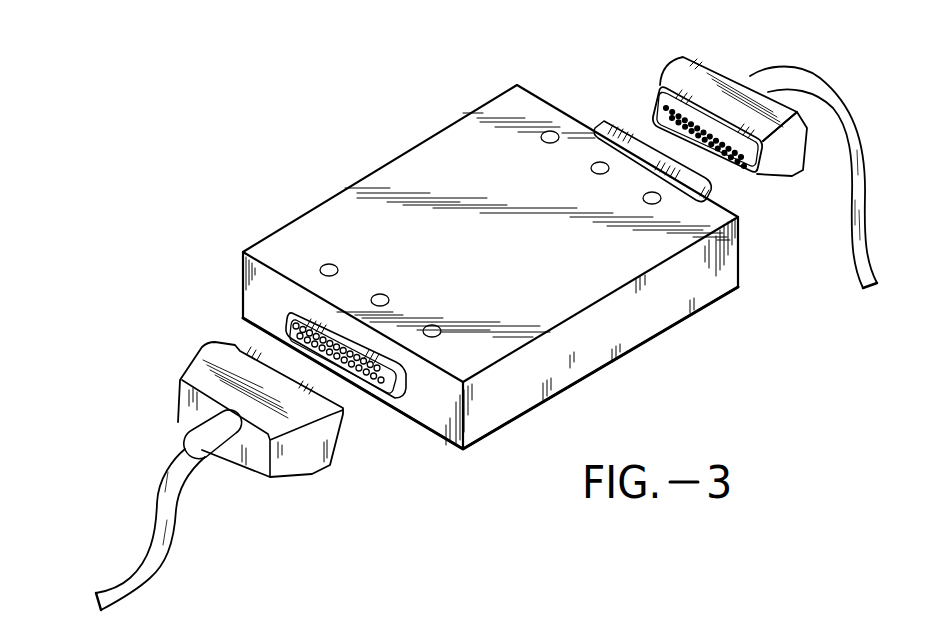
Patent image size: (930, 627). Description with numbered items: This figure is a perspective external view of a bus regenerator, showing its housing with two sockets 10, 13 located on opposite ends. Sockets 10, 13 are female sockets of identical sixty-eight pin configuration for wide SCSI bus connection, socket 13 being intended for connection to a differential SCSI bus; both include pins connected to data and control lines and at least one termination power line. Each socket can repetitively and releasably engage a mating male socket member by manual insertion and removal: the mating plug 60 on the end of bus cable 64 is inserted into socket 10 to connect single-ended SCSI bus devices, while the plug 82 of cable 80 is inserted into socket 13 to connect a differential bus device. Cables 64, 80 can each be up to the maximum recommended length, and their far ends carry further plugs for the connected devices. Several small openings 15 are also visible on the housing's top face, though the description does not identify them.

The socket 10 is at (398, 388).
The socket 13 is at (615, 123).
The mounting holes 15 is at (644, 199).
The mating plug 60 is at (297, 475).
The bus cable 64 is at (158, 490).
The cable 80 is at (830, 86).
The plug 82 is at (797, 153).